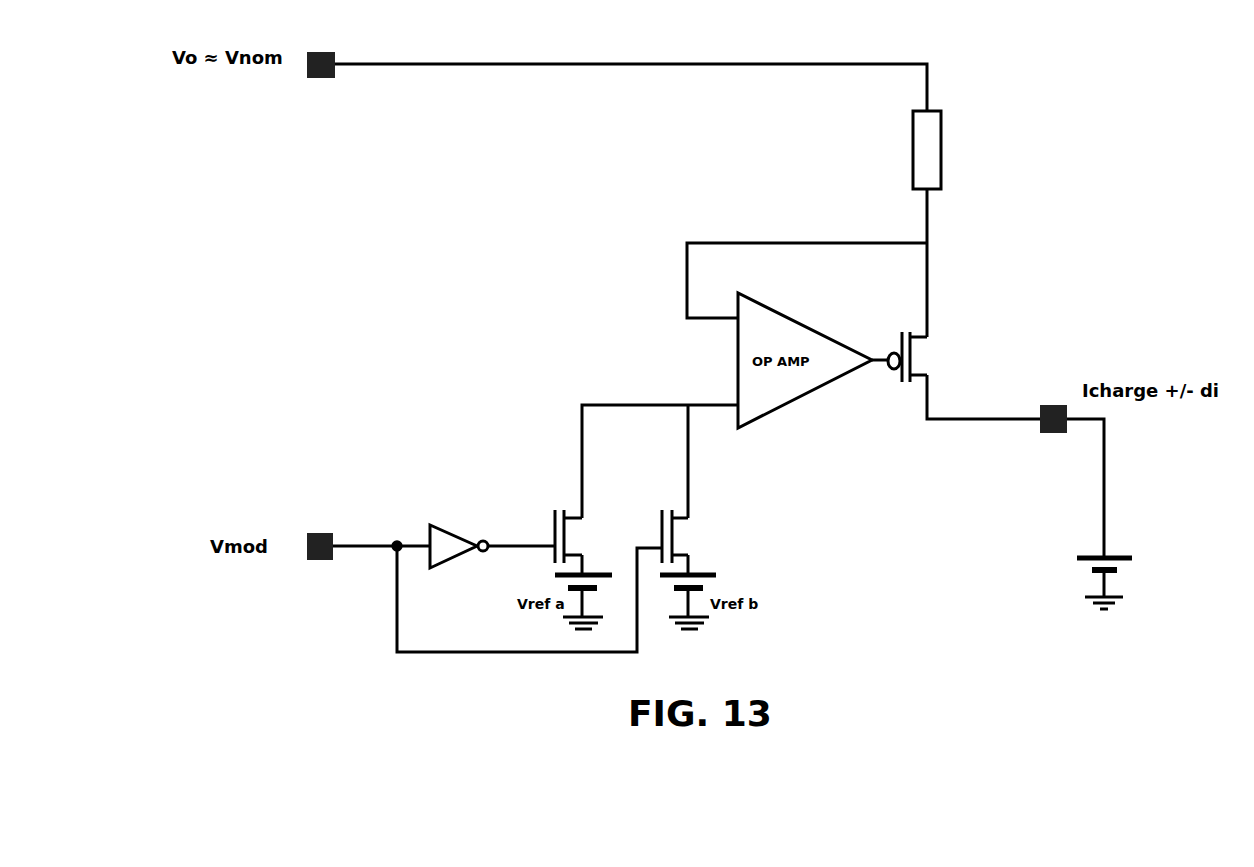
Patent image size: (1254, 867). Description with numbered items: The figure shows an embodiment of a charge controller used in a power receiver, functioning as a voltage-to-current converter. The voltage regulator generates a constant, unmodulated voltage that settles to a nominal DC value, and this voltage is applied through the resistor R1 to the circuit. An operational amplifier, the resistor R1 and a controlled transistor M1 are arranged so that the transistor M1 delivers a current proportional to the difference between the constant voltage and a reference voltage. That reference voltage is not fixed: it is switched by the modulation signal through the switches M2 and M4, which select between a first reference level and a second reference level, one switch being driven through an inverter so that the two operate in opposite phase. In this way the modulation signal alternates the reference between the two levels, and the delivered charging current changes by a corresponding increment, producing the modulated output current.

The resistor R1 is at (911, 150).
The controlled transistor M1 is at (923, 357).
The switch M2 is at (579, 536).
The switch M4 is at (688, 536).